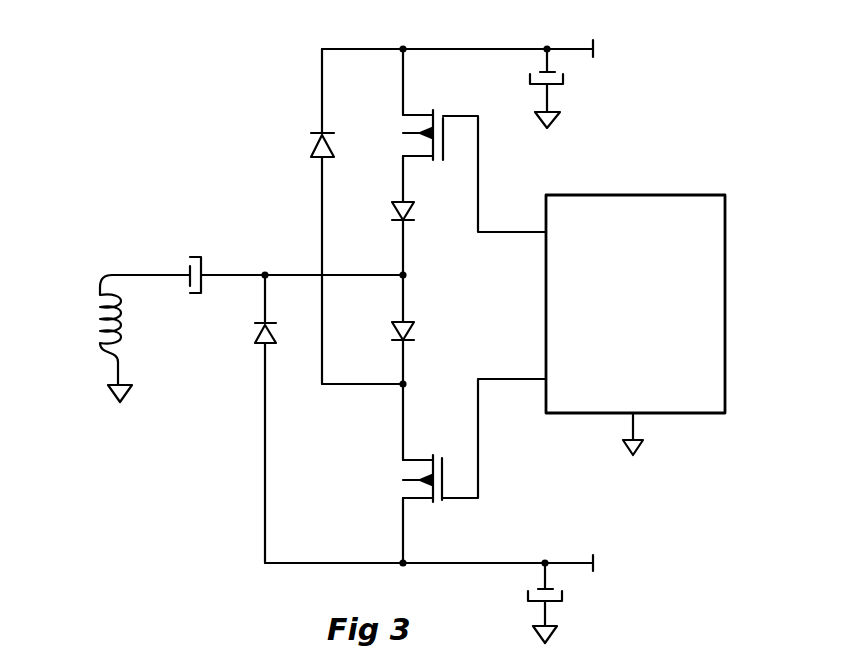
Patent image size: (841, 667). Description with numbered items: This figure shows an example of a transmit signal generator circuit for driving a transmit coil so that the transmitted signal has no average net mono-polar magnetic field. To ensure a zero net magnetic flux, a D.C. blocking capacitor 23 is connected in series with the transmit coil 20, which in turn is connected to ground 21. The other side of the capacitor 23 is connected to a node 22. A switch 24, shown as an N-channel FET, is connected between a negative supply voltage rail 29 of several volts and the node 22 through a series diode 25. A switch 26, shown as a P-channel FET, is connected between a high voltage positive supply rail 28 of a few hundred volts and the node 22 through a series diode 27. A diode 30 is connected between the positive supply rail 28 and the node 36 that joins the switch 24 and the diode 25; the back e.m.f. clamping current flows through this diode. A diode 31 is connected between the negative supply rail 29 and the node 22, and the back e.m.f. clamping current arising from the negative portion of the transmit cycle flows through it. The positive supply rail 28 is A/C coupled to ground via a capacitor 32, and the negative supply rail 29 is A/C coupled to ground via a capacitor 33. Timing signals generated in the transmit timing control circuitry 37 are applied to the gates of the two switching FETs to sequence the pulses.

The transmit coil 20 is at (100, 310).
The ground 21 is at (118, 403).
The node 22 is at (404, 292).
The D.C. blocking capacitor 23 is at (198, 253).
The switch 24 is at (402, 487).
The series diode 25 is at (410, 333).
The switch 26 is at (405, 133).
The series diode 27 is at (412, 208).
The positive supply rail 28 is at (595, 48).
The negative supply voltage rail 29 is at (595, 562).
The diode 30 is at (310, 152).
The diode 31 is at (258, 333).
The capacitor 32 is at (565, 80).
The capacitor 33 is at (563, 596).
The node connecting switch and diode 36 is at (321, 386).
The transmit timing control circuitry 37 is at (636, 196).